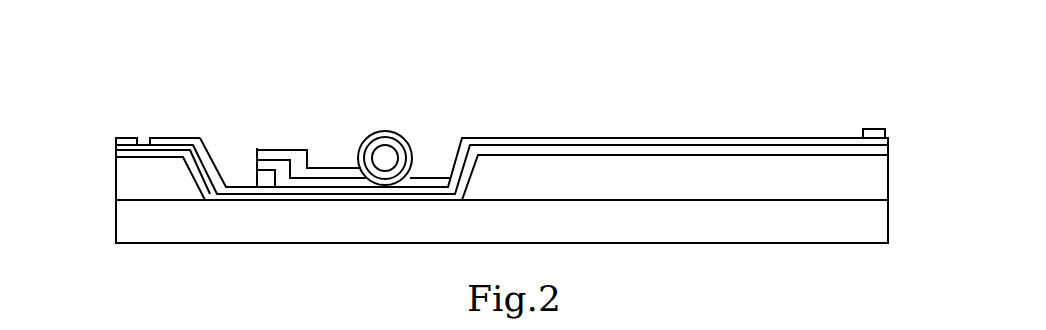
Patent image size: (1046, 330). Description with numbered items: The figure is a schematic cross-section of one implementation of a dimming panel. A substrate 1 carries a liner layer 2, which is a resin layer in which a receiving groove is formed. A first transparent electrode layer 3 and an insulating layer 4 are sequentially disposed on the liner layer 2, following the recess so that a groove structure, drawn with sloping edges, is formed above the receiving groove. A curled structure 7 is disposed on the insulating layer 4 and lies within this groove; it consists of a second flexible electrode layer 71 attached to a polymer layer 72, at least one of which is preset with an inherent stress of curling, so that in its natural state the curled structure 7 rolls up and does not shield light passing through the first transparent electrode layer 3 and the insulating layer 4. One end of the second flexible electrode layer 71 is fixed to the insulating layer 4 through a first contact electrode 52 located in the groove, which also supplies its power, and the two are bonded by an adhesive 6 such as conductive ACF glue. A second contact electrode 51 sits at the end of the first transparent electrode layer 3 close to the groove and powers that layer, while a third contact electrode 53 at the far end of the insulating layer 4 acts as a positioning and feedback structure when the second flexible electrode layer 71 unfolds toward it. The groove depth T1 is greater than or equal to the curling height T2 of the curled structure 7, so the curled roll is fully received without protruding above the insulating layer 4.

The substrate 1 is at (888, 222).
The liner layer 2 is at (888, 185).
The first transparent electrode layer 3 is at (888, 153).
The insulating layer 4 is at (888, 138).
The second contact electrode 51 is at (117, 137).
The first contact electrode 52 is at (257, 180).
The third contact electrode 53 is at (887, 128).
The adhesive 6 is at (257, 168).
The curled structure 7 is at (270, 105).
The second flexible electrode layer 71 is at (257, 152).
The polymer layer 72 is at (278, 150).
The depth of the groove structure T1 is at (468, 138).
The curling height of the curled structure T2 is at (358, 130).